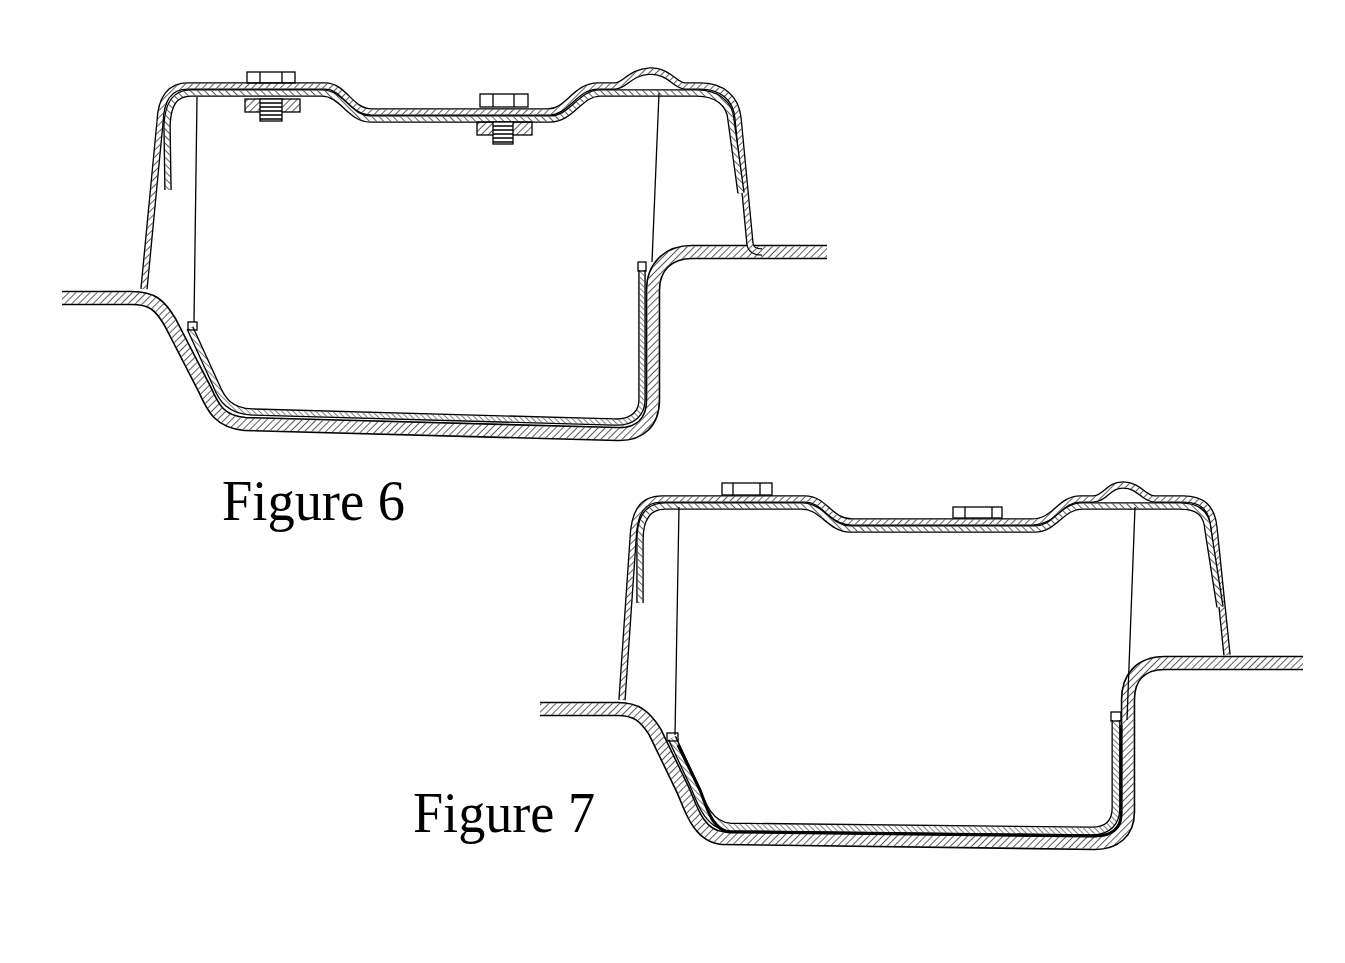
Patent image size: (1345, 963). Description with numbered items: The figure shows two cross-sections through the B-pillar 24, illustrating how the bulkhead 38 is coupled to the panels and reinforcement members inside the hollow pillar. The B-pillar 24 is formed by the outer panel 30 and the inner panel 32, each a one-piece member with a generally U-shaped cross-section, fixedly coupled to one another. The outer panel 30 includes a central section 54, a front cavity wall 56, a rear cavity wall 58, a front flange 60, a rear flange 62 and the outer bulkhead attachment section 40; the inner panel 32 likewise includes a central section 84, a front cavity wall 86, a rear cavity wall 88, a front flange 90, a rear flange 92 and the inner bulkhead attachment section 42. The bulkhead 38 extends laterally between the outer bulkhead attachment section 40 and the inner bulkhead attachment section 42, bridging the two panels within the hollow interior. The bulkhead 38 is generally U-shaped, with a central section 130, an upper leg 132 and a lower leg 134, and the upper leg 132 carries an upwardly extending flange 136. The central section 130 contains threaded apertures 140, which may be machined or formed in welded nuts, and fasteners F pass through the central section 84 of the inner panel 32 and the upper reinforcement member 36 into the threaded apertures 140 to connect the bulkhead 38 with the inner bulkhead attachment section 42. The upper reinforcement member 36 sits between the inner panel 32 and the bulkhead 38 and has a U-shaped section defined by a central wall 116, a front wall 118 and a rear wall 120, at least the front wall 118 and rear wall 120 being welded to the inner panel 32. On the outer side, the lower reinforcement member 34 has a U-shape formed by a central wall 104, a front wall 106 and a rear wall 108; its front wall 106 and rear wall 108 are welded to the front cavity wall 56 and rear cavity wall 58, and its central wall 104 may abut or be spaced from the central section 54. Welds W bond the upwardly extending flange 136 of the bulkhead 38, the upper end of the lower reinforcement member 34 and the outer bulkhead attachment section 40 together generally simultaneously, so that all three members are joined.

In FIG. 6, the B-pillar 24 is at (866, 178).
In FIG. 7, the B-pillar 24 is at (923, 444).
In FIG. 6, the outer panel 30 is at (704, 272).
In FIG. 7, the outer panel 30 is at (1161, 697).
In FIG. 6, the inner panel 32 is at (766, 208).
In FIG. 7, the inner panel 32 is at (1245, 624).
In FIG. 6, the lower reinforcement member 34 is at (333, 396).
In FIG. 7, the lower reinforcement member 34 is at (669, 728).
In FIG. 6, the upper reinforcement member 36 is at (181, 118).
In FIG. 7, the upper reinforcement member 36 is at (659, 526).
In FIG. 6, the bulkhead 38 is at (668, 143).
In FIG. 7, the bulkhead 38 is at (1142, 563).
In FIG. 6, the outer bulkhead attachment section 40 is at (500, 443).
In FIG. 7, the outer bulkhead attachment section 40 is at (800, 843).
In FIG. 6, the inner bulkhead attachment section 42 is at (433, 104).
In FIG. 7, the inner bulkhead attachment section 42 is at (935, 516).
In FIG. 6, the central section 54 is at (308, 430).
In FIG. 7, the central section 54 is at (855, 843).
In FIG. 6, the front cavity wall 56 is at (198, 396).
In FIG. 7, the front cavity wall 56 is at (676, 800).
In FIG. 6, the rear cavity wall 58 is at (659, 373).
In FIG. 6, the front flange 60 is at (106, 306).
In FIG. 7, the front flange 60 is at (580, 717).
In FIG. 6, the rear flange 62 is at (790, 259).
In FIG. 7, the rear flange 62 is at (1215, 669).
In FIG. 6, the central section 84 is at (407, 103).
In FIG. 7, the central section 84 is at (878, 519).
In FIG. 6, the front cavity wall 86 is at (146, 172).
In FIG. 7, the front cavity wall 86 is at (621, 645).
In FIG. 6, the rear cavity wall 88 is at (742, 122).
In FIG. 7, the rear cavity wall 88 is at (1216, 548).
In FIG. 6, the front flange 90 is at (122, 291).
In FIG. 7, the front flange 90 is at (597, 706).
In FIG. 6, the rear flange 92 is at (790, 247).
In FIG. 7, the rear flange 92 is at (1258, 659).
In FIG. 6, the central wall 104 is at (476, 410).
In FIG. 7, the central wall 104 is at (962, 820).
In FIG. 6, the front wall 106 is at (206, 362).
In FIG. 7, the front wall 106 is at (700, 805).
In FIG. 6, the rear wall 108 is at (639, 345).
In FIG. 7, the rear wall 108 is at (1131, 815).
In FIG. 6, the central wall 116 is at (362, 120).
In FIG. 7, the central wall 116 is at (818, 533).
In FIG. 6, the front wall 118 is at (166, 162).
In FIG. 7, the front wall 118 is at (676, 565).
In FIG. 6, the rear wall 120 is at (730, 154).
In FIG. 7, the rear wall 120 is at (1206, 570).
In FIG. 6, the central section 130 is at (458, 124).
In FIG. 7, the upper leg 132 is at (1100, 645).
In FIG. 6, the lower leg 134 is at (605, 262).
In FIG. 7, the upwardly extending flange 136 is at (868, 819).
In FIG. 6, the threaded apertures 140 is at (268, 122).
In FIG. 6, the fasteners F is at (268, 78).
In FIG. 7, the fasteners F is at (745, 486).
In FIG. 7, the welds W is at (690, 770).